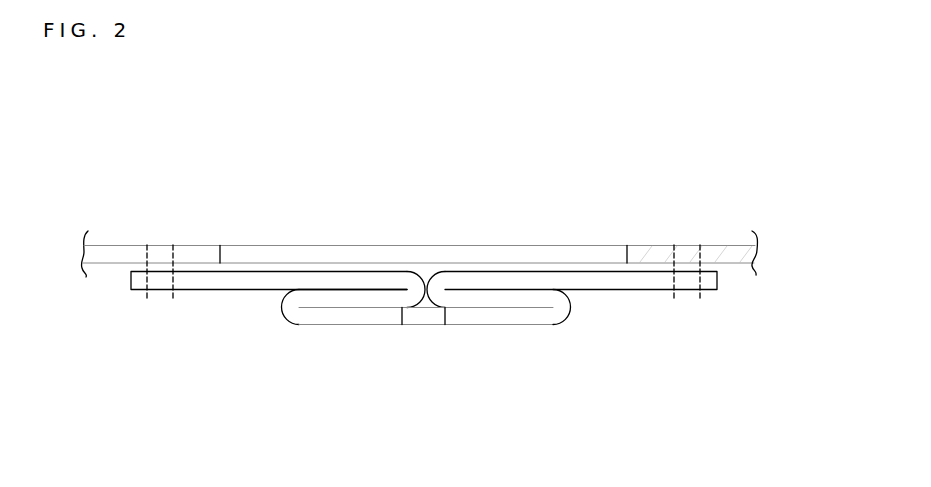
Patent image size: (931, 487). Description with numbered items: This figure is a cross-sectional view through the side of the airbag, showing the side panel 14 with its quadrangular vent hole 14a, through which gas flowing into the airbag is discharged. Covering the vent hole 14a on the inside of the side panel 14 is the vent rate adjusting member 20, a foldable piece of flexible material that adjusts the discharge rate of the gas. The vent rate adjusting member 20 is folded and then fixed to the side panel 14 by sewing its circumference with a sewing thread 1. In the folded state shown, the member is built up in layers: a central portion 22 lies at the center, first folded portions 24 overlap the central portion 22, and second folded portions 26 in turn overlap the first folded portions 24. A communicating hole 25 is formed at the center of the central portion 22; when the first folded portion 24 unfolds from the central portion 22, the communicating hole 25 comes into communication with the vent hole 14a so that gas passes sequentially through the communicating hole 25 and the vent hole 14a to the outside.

The side panel 14 is at (102, 257).
The vent hole 14a is at (525, 255).
The sewing thread 1 is at (173, 245).
The vent rate adjusting member 20 is at (422, 366).
The second folded portion 26 is at (208, 280).
The first folded portion 24 is at (318, 297).
The central portion 22 is at (333, 318).
The communicating hole 25 is at (427, 319).